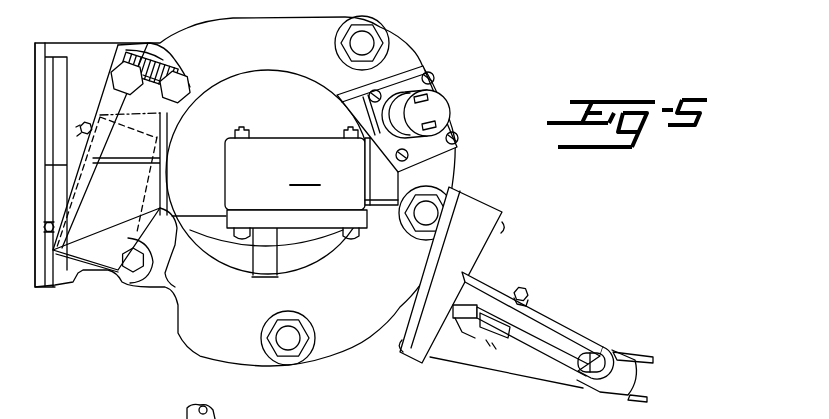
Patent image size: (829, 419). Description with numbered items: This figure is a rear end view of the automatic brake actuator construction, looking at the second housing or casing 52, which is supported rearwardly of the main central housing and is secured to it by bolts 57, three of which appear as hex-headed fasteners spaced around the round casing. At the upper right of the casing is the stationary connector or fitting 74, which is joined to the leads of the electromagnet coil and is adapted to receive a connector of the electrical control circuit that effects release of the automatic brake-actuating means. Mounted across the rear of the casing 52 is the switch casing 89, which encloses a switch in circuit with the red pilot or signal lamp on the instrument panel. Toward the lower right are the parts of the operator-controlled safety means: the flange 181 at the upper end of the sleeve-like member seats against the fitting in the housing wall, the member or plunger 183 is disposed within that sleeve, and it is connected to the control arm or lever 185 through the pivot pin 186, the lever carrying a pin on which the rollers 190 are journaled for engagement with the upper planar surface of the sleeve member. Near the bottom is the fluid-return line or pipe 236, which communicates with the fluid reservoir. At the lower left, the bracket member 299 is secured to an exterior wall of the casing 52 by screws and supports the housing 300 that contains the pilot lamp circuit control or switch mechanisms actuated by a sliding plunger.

The second housing or casing 52 is at (317, 265).
The bolts 57 is at (433, 197).
The stationary connector or fitting 74 is at (433, 102).
The switch casing 89 is at (311, 183).
The flange 181 is at (492, 213).
The member or plunger 183 is at (467, 320).
The control arm or lever 185 is at (587, 343).
The pivot pin 186 is at (524, 293).
The rollers 190 is at (493, 272).
The fluid-return line or pipe 236 is at (213, 413).
The bracket member 299 is at (152, 250).
The housing 300 is at (102, 255).